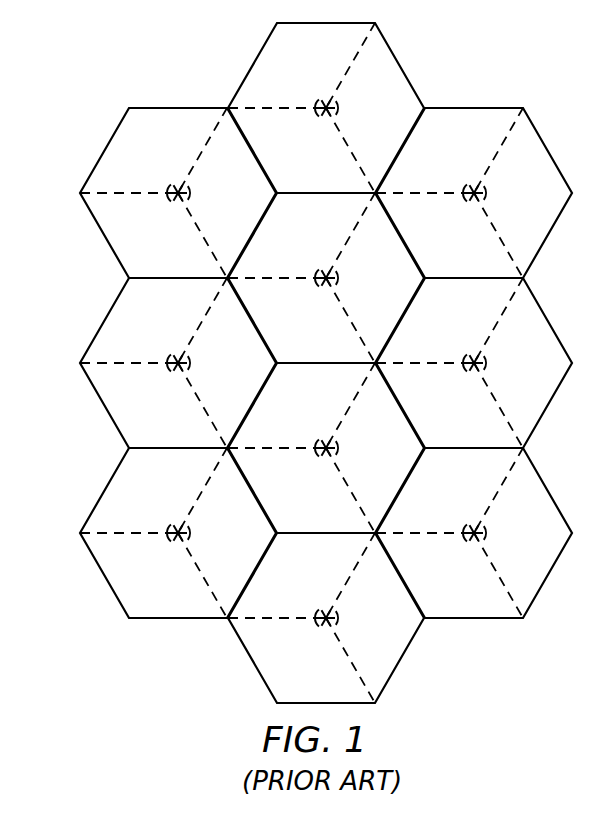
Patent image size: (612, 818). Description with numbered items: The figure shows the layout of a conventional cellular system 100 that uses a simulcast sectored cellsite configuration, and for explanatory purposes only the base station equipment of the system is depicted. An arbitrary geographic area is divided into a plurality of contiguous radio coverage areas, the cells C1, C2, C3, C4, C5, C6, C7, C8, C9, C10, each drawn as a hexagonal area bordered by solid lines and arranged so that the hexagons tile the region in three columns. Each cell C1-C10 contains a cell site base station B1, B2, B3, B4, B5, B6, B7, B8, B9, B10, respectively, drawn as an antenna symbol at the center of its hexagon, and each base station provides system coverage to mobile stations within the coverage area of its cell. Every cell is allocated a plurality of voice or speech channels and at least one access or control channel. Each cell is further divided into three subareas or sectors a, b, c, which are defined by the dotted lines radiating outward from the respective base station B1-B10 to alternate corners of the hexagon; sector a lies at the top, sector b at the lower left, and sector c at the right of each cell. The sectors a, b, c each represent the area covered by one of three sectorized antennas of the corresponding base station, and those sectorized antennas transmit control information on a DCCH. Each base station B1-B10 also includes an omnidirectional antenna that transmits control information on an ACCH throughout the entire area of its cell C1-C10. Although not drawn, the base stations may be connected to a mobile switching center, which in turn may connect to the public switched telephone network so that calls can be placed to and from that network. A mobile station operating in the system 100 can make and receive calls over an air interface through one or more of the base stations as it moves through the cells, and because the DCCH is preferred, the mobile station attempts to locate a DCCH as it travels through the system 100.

The cellular system 100 is at (294, 363).
The cell C1 is at (159, 612).
The cell C2 is at (159, 442).
The cell C3 is at (159, 272).
The cell C4 is at (307, 697).
The cell C5 is at (307, 527).
The cell C6 is at (307, 357).
The cell C7 is at (307, 187).
The cell C8 is at (455, 612).
The cell C9 is at (455, 442).
The cell C10 is at (466, 272).
The cell site base station B1 is at (207, 543).
The cell site base station B2 is at (207, 373).
The cell site base station B3 is at (207, 203).
The cell site base station B4 is at (355, 628).
The cell site base station B5 is at (355, 458).
The cell site base station B6 is at (355, 288).
The cell site base station B7 is at (355, 118).
The cell site base station B8 is at (503, 543).
The cell site base station B9 is at (503, 373).
The cell site base station B10 is at (510, 203).
The sector a is at (321, 295).
The sector b is at (277, 379).
The sector c is at (393, 332).